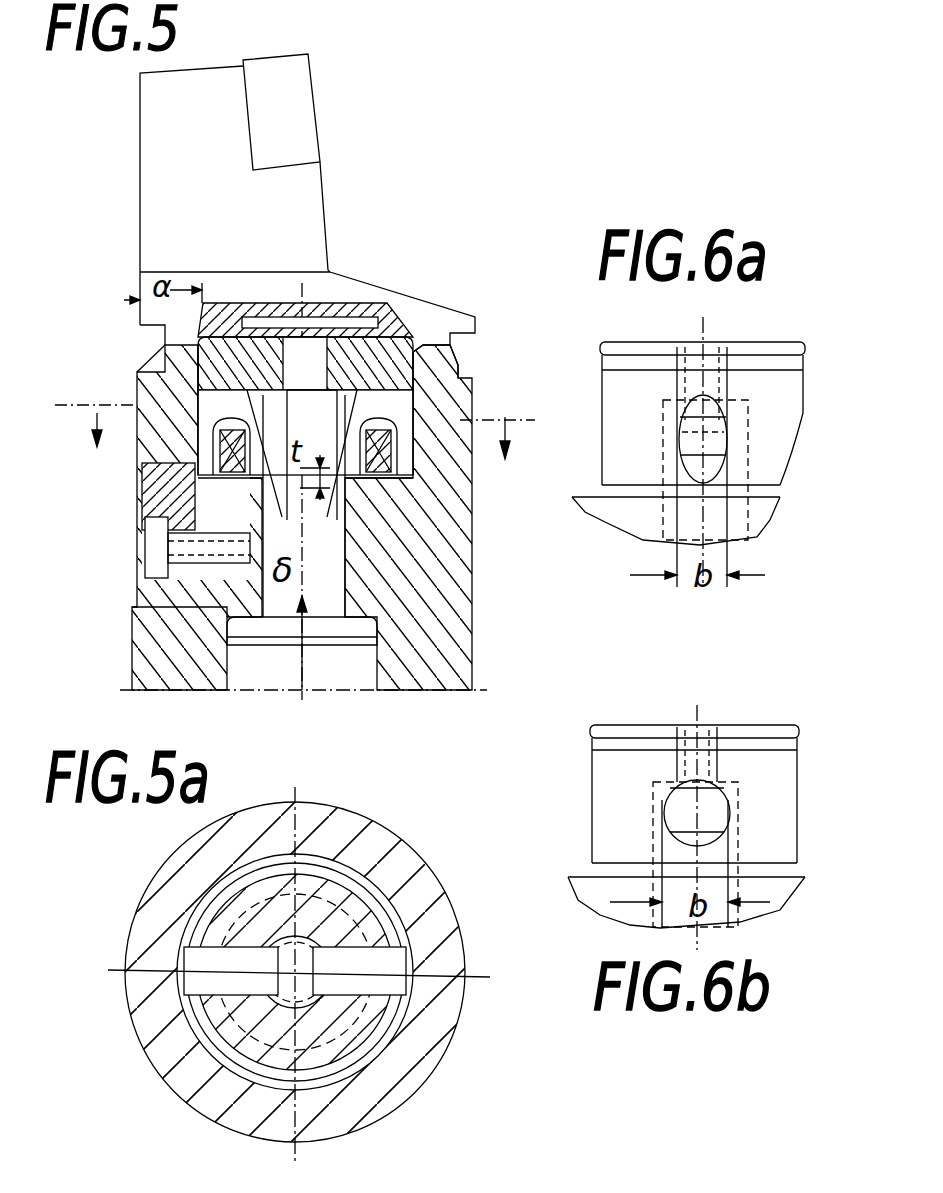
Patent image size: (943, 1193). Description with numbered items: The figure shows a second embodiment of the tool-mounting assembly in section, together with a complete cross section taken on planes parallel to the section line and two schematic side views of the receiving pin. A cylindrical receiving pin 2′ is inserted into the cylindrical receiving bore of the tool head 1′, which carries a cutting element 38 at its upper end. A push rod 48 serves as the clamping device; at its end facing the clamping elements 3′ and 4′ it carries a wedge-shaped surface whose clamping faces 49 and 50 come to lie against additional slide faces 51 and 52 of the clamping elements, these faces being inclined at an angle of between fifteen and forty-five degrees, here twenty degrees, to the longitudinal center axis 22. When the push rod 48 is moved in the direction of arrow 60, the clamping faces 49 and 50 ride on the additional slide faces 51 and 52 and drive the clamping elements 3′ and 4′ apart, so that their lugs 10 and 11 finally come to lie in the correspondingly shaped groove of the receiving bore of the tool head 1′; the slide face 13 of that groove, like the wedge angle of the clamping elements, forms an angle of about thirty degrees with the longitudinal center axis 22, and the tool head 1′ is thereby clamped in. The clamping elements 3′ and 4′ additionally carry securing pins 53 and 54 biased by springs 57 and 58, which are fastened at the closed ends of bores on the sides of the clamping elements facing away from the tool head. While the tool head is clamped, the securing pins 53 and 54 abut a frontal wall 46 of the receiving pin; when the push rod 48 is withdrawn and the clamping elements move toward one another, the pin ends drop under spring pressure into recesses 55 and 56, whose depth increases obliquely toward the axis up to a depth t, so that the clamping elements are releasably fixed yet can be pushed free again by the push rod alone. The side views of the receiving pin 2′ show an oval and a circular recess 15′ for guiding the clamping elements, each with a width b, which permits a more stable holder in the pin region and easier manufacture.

In FIG. 5, the tool head 1′ is at (157, 138).
In FIG. 5, the receiving pin 2′ is at (380, 345).
In FIG. 6a, the receiving pin 2′ is at (768, 392).
In FIG. 6b, the receiving pin 2′ is at (757, 770).
In FIG. 5, the clamping element 3′ is at (197, 423).
In FIG. 5a, the clamping element 3′ is at (200, 1012).
In FIG. 5, the clamping element 4′ is at (462, 408).
In FIG. 5a, the clamping element 4′ is at (400, 1017).
In FIG. 5, the lug 10 is at (197, 412).
In FIG. 5, the lug 11 is at (460, 375).
In FIG. 5, the slide face 13 is at (190, 420).
In FIG. 6a, the recess 15′ is at (717, 440).
In FIG. 6b, the recess 15′ is at (712, 812).
In FIG. 5, the longitudinal center axis 22 is at (305, 288).
In FIG. 5, the cutting insert 38 is at (302, 93).
In FIG. 5, the frontal wall 46 is at (187, 527).
In FIG. 5, the push rod 48 is at (322, 597).
In FIG. 5, the clamping face 49 is at (137, 600).
In FIG. 5, the clamping face 50 is at (385, 545).
In FIG. 5, the additional slide face 51 is at (237, 335).
In FIG. 5, the additional slide face 52 is at (438, 355).
In FIG. 5, the securing pin 53 is at (215, 470).
In FIG. 5, the securing pin 54 is at (395, 505).
In FIG. 5, the recess 55 is at (187, 547).
In FIG. 5, the recess 56 is at (380, 533).
In FIG. 5, the spring 57 is at (230, 440).
In FIG. 5, the spring 58 is at (405, 480).
In FIG. 5, the arrow 60 is at (300, 596).